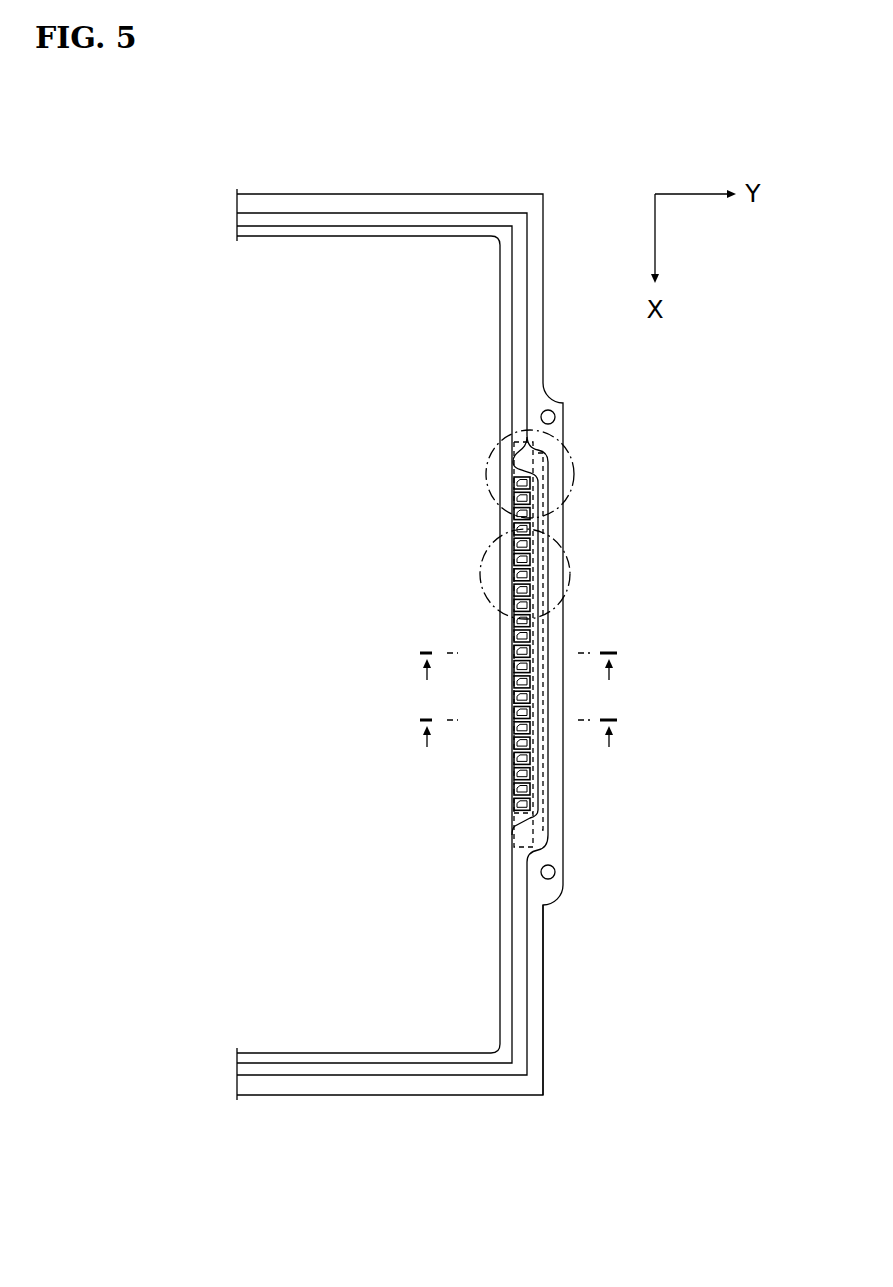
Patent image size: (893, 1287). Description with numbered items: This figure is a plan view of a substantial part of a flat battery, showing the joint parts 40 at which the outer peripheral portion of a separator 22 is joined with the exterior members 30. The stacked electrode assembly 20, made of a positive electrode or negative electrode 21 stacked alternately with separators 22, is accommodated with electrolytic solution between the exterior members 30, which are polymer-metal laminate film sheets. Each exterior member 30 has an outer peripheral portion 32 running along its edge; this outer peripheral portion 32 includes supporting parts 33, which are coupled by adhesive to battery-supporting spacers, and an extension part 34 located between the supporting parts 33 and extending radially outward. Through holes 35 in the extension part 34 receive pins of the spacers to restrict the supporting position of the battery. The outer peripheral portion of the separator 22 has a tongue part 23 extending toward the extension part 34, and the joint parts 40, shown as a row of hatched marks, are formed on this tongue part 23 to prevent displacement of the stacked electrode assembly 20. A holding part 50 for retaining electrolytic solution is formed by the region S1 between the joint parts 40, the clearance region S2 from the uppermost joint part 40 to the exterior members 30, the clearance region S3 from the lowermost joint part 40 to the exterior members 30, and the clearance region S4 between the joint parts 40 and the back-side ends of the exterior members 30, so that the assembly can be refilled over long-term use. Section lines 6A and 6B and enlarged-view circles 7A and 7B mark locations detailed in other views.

The stacked electrode assembly 20 is at (347, 1017).
The positive electrode or negative electrode 21 is at (280, 238).
The separator 22 is at (362, 228).
The tongue part 23 is at (538, 782).
The exterior member 30 is at (468, 193).
The outer peripheral portion 32 is at (533, 262).
The supporting part 33 is at (538, 343).
The extension part 34 is at (560, 812).
The through hole 35 is at (556, 417).
The joint part 40 is at (518, 500).
The holding part 50 is at (516, 622).
The region between joint parts S1 is at (512, 594).
The clearance region S2 is at (513, 446).
The clearance region S3 is at (513, 838).
The clearance region S4 is at (545, 527).
The section line 6A is at (517, 659).
The section line 6B is at (517, 726).
The enlarged region 7A is at (575, 467).
The enlarged region 7B is at (570, 567).